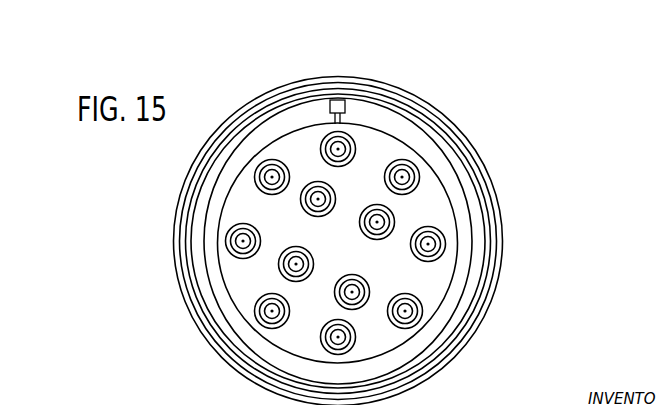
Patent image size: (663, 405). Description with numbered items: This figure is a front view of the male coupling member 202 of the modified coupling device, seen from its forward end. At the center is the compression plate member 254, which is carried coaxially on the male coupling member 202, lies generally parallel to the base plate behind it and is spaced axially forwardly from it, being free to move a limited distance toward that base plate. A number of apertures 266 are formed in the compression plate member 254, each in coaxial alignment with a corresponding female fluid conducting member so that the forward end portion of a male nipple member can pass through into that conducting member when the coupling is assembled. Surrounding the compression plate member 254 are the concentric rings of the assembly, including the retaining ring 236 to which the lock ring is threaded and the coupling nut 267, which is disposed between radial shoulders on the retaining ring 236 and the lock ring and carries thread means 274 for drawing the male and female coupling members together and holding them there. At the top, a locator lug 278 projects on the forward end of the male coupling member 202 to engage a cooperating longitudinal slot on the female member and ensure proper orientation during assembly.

The male coupling member 202 is at (459, 168).
The retaining ring 236 is at (193, 213).
The compression plate member 254 is at (400, 243).
The apertures 266 is at (410, 309).
The coupling nut 267 is at (190, 316).
The thread means 274 is at (440, 347).
The locator lug 278 is at (339, 100).